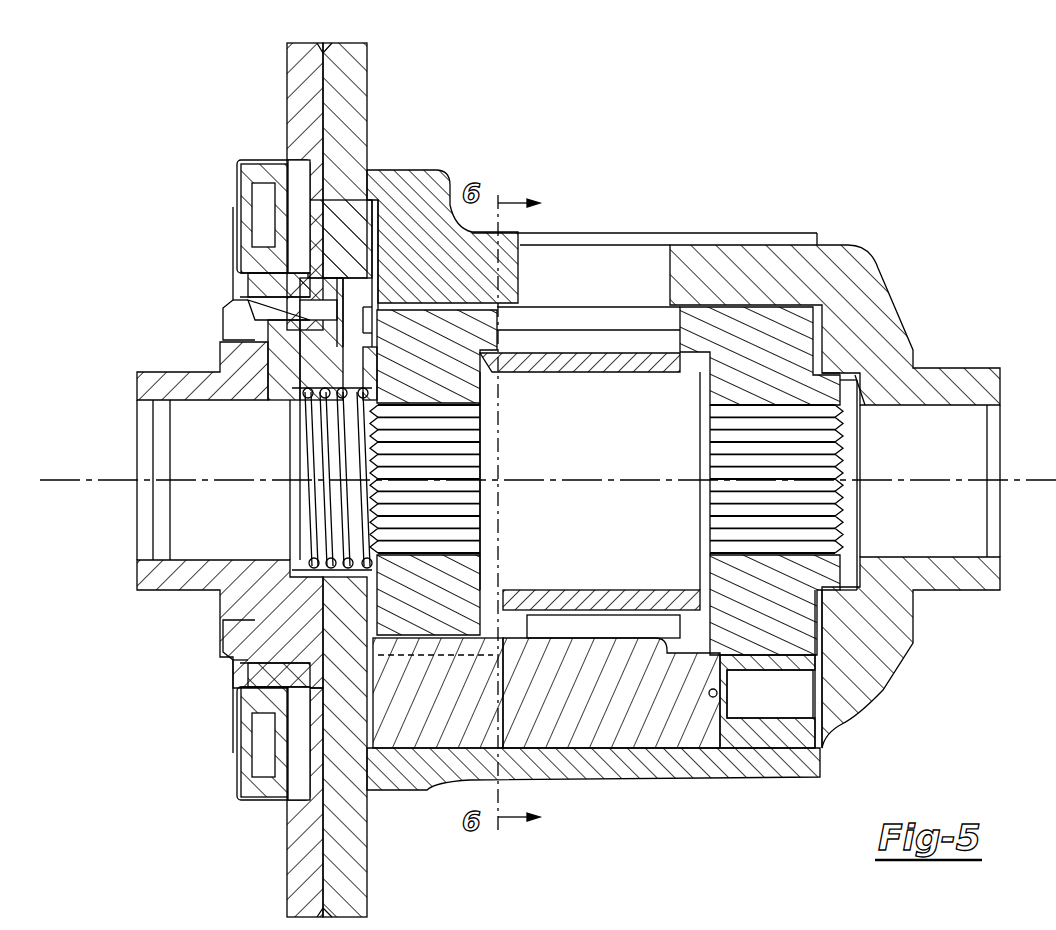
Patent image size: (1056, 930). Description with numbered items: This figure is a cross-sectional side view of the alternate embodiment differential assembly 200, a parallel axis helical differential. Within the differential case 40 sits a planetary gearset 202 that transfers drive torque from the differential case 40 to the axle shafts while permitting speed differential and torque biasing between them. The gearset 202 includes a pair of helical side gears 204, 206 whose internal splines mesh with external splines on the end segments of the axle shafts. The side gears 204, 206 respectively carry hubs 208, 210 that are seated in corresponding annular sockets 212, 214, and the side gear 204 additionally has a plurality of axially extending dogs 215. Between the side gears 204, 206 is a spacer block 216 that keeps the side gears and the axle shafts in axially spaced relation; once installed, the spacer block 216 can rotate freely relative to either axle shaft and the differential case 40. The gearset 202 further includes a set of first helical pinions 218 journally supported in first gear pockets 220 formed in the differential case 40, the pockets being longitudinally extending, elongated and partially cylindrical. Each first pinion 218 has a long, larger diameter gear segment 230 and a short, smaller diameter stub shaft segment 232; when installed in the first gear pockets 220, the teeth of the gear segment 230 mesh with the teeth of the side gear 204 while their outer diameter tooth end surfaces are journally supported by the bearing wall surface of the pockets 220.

The differential assembly 200 is at (820, 108).
The differential case 40 is at (427, 190).
The planetary gearset 202 is at (838, 316).
The helical side gear 204 is at (417, 295).
The helical side gear 206 is at (772, 320).
The hub 208 is at (363, 347).
The hub 210 is at (836, 378).
The annular socket 212 is at (373, 692).
The annular socket 214 is at (865, 402).
The axially extending dogs 215 is at (333, 603).
The spacer block 216 is at (597, 358).
The first helical pinions 218 is at (560, 735).
The first gear pockets 220 is at (628, 735).
The gear segment 230 is at (533, 740).
The stub shaft segment 232 is at (715, 705).